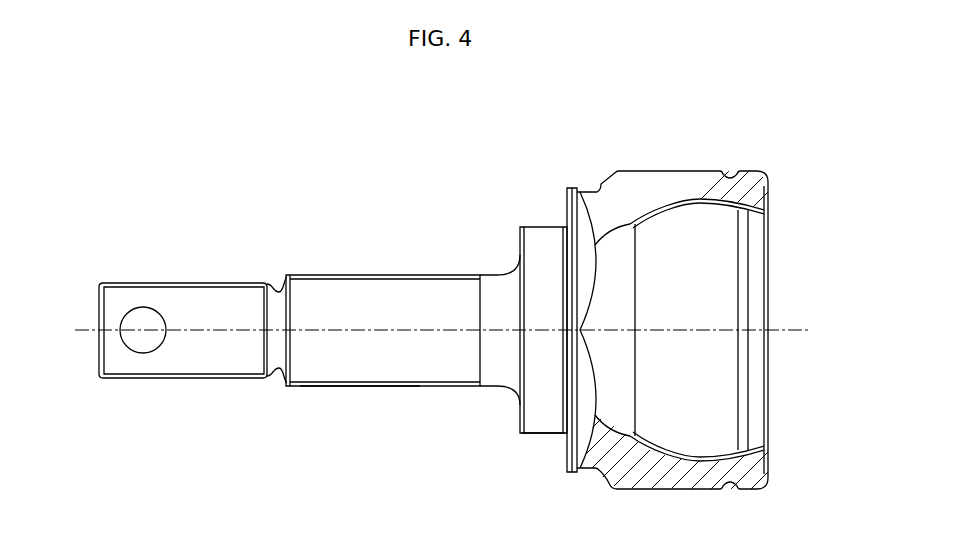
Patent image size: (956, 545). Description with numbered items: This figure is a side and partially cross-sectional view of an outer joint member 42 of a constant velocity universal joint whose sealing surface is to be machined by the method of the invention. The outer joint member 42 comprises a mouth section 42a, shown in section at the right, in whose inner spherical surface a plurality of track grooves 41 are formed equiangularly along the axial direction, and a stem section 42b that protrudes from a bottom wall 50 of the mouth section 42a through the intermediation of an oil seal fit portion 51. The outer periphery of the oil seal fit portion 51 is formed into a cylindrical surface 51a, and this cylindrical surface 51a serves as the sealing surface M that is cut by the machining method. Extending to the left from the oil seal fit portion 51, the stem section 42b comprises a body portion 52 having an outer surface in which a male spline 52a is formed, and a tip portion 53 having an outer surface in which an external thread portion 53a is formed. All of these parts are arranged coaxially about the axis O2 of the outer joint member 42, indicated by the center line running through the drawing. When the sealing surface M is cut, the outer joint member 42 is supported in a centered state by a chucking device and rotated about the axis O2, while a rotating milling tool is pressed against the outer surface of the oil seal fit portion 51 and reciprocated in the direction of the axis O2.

The track grooves 41 is at (700, 455).
The outer joint member 42 is at (449, 270).
The mouth section 42a is at (652, 170).
The stem section 42b is at (335, 388).
The bottom wall 50 is at (584, 192).
The oil seal fit portion 51 is at (547, 224).
The cylindrical surface 51a is at (545, 436).
The body portion 52 is at (373, 297).
The male spline 52a is at (390, 370).
The tip portion 53 is at (207, 307).
The external thread portion 53a is at (187, 363).
The sealing surface M is at (538, 263).
The axis O2 is at (330, 329).